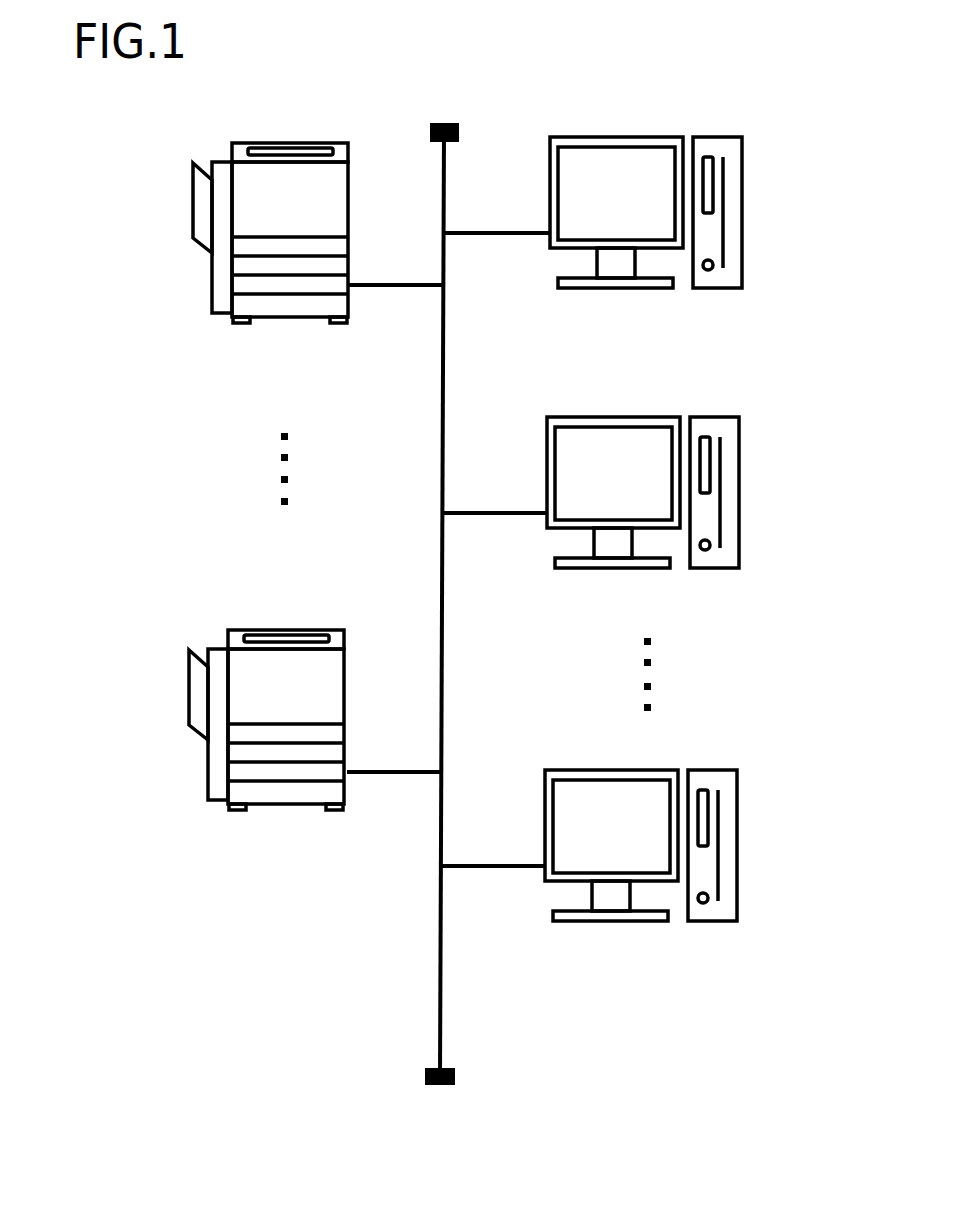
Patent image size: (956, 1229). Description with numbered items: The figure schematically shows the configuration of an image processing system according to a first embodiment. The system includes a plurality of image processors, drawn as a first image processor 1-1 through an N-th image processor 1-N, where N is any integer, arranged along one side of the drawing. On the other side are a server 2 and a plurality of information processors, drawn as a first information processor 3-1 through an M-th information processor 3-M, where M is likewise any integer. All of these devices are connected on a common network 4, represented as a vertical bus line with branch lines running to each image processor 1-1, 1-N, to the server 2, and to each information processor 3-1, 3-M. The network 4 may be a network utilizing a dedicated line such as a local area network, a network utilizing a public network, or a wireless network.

The image processor 1-1 is at (290, 143).
The image processor 1-N is at (287, 630).
The server 2 is at (720, 137).
The information processor 3-1 is at (718, 417).
The information processor 3-M is at (717, 770).
The network 4 is at (440, 985).